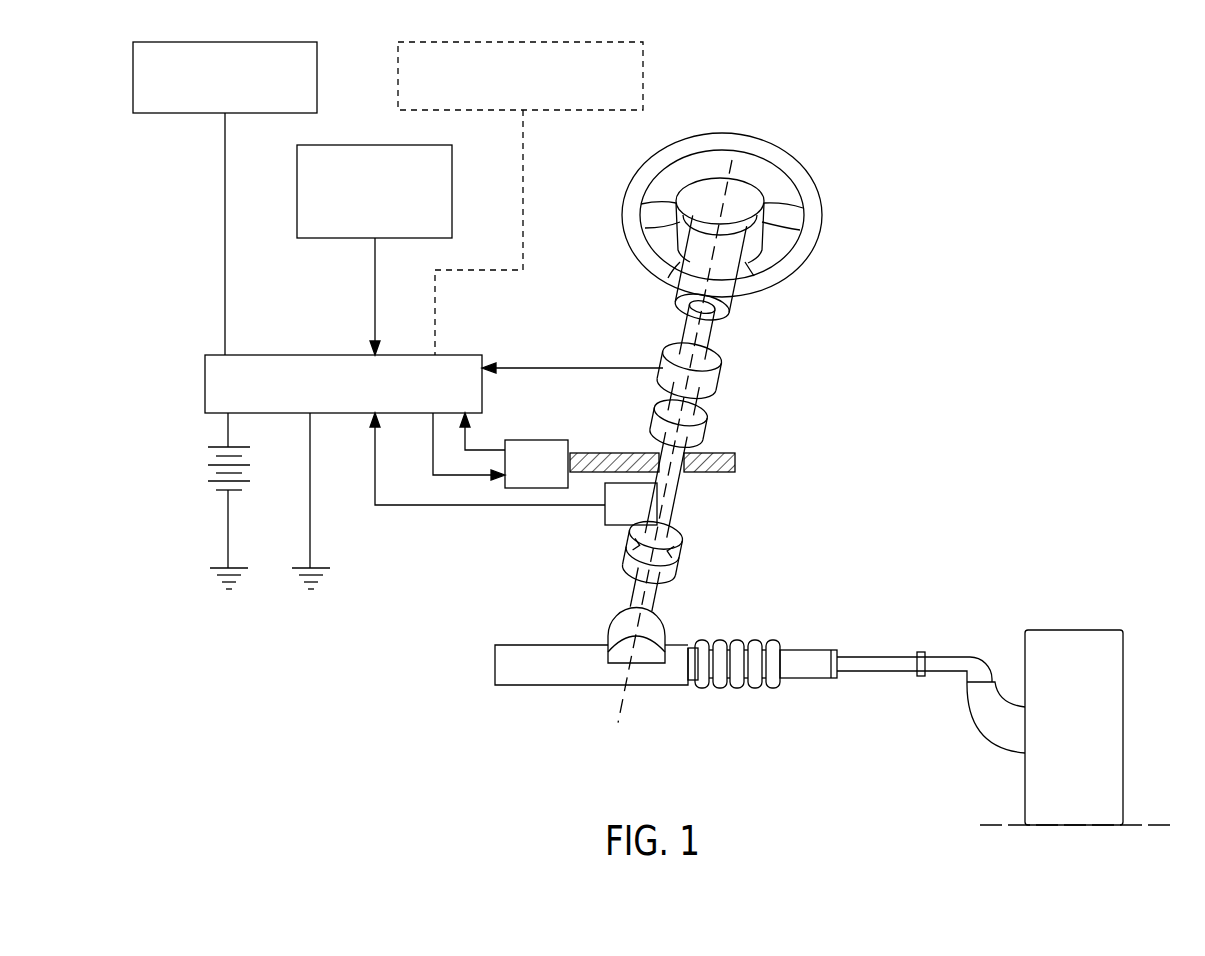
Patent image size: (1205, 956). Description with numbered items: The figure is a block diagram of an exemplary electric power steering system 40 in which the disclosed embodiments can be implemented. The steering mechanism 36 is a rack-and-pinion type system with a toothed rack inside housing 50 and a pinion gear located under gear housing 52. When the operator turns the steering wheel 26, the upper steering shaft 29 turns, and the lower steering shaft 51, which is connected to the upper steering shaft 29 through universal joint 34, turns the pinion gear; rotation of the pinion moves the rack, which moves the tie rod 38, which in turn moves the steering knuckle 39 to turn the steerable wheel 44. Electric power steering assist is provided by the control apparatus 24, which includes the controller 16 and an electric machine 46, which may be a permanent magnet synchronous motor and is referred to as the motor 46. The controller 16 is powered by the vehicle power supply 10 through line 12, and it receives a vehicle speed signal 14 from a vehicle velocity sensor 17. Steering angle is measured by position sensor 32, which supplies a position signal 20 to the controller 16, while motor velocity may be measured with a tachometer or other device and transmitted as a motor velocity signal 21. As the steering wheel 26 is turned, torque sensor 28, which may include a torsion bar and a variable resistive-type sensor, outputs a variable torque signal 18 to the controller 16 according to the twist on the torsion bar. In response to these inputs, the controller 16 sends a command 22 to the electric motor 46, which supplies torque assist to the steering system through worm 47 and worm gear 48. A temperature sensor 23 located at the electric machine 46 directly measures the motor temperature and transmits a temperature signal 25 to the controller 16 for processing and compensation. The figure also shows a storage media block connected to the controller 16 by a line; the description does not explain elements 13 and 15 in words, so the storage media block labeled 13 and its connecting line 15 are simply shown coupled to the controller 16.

The vehicle power supply 10 is at (215, 470).
The line 12 is at (228, 428).
The storage media 13 is at (163, 113).
The vehicle speed signal 14 is at (375, 253).
The storage media connection 15 is at (225, 177).
The controller 16 is at (345, 355).
The vehicle velocity sensor 17 is at (372, 145).
The torque signal 18 is at (583, 368).
The position signal 20 is at (490, 505).
The motor velocity signal 21 is at (490, 450).
The command 22 is at (450, 477).
The temperature sensor 23 is at (645, 82).
The control apparatus 24 is at (903, 360).
The temperature signal 25 is at (523, 172).
The steering wheel 26 is at (775, 165).
The torque sensor 28 is at (712, 370).
The upper steering shaft 29 is at (686, 336).
The position sensor 32 is at (605, 515).
The universal joint 34 is at (684, 551).
The steering mechanism 36 is at (758, 643).
The tie rod 38 is at (873, 672).
The steering knuckle 39 is at (992, 715).
The electric power steering system 40 is at (983, 455).
The steerable wheel 44 is at (1060, 642).
The electric machine 46 is at (542, 440).
The worm 47 is at (735, 463).
The worm gear 48 is at (698, 426).
The housing 50 is at (534, 686).
The lower steering shaft 51 is at (660, 604).
The gear housing 52 is at (610, 626).